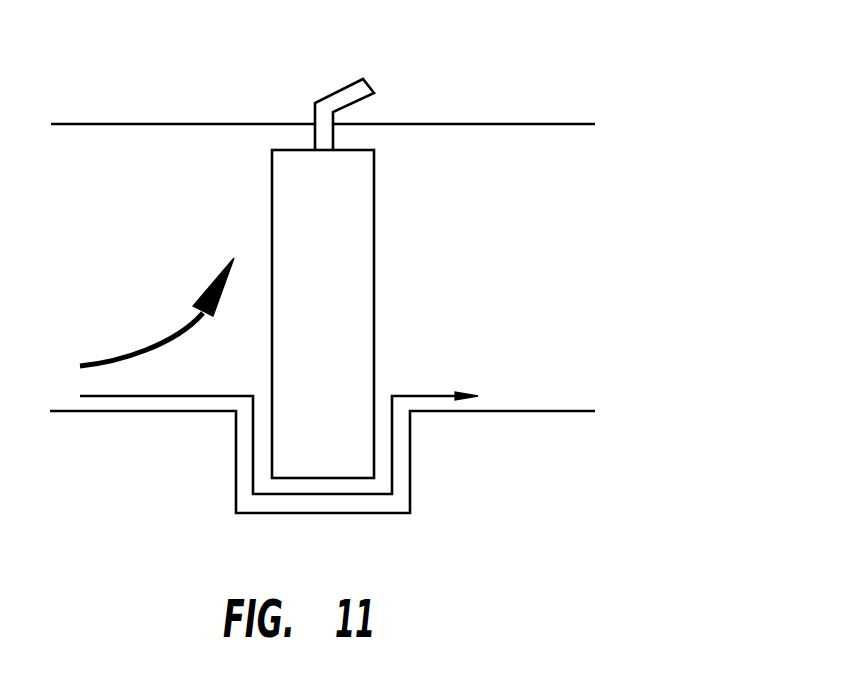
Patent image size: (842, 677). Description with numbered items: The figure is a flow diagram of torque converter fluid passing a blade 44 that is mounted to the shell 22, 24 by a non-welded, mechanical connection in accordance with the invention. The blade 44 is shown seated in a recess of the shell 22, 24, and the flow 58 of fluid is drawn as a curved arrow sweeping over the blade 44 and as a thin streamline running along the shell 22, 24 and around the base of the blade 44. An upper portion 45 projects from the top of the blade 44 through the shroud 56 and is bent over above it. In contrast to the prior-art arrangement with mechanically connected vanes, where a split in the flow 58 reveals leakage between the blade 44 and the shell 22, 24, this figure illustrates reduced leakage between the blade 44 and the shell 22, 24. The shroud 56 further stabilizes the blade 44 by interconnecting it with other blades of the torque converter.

The shell 22 is at (376, 481).
The shell 24 is at (502, 412).
The blade 44 is at (375, 222).
The inlet tube 45 is at (340, 92).
The shroud 56 is at (487, 124).
The flow of fluid 58 is at (162, 340).